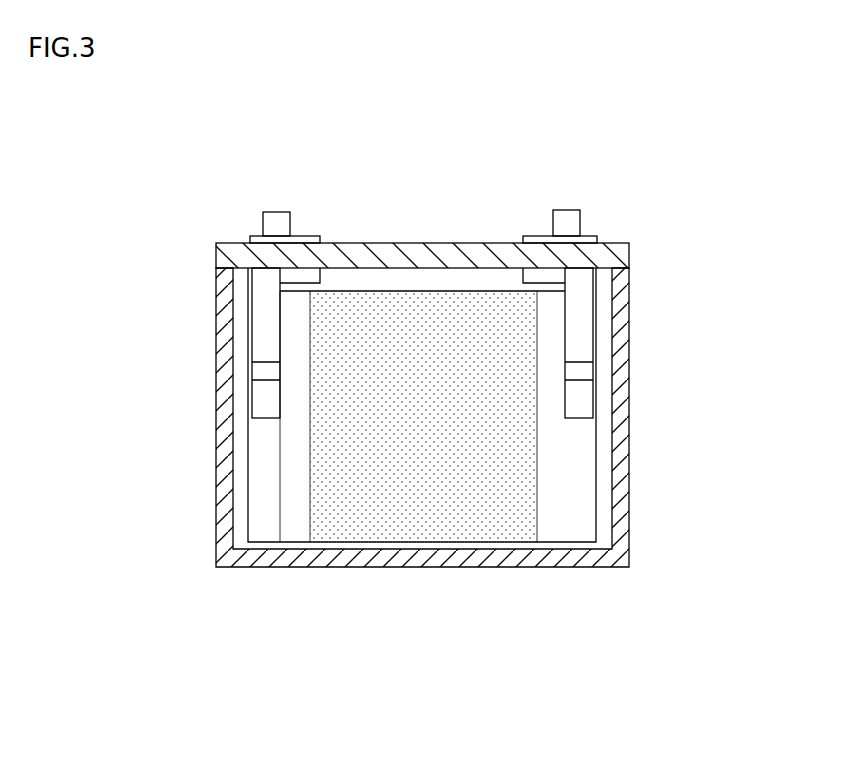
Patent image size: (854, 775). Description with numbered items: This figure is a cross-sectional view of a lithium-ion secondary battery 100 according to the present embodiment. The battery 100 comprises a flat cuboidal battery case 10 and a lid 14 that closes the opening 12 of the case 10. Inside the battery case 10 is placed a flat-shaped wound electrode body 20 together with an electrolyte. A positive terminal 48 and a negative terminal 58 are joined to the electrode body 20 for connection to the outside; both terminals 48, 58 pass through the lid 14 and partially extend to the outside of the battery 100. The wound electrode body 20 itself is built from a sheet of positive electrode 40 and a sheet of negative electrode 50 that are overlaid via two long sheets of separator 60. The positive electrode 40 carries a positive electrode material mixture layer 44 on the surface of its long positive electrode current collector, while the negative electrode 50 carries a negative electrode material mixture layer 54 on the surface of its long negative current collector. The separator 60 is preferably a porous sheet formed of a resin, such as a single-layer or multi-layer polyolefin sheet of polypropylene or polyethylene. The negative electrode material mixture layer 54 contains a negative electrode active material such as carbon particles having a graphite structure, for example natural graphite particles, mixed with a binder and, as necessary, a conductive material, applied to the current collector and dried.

The lithium-ion secondary battery 100 is at (190, 127).
The battery case 10 is at (634, 510).
The opening 12 is at (403, 281).
The lid 14 is at (361, 241).
The wound electrode body 20 is at (444, 289).
The positive electrode 40 is at (277, 532).
The positive electrode material mixture layer 44 is at (371, 508).
The positive terminal 48 is at (275, 212).
The negative electrode 50 is at (562, 532).
The negative electrode material mixture layer 54 is at (510, 508).
The negative terminal 58 is at (567, 214).
The separator 60 is at (437, 528).